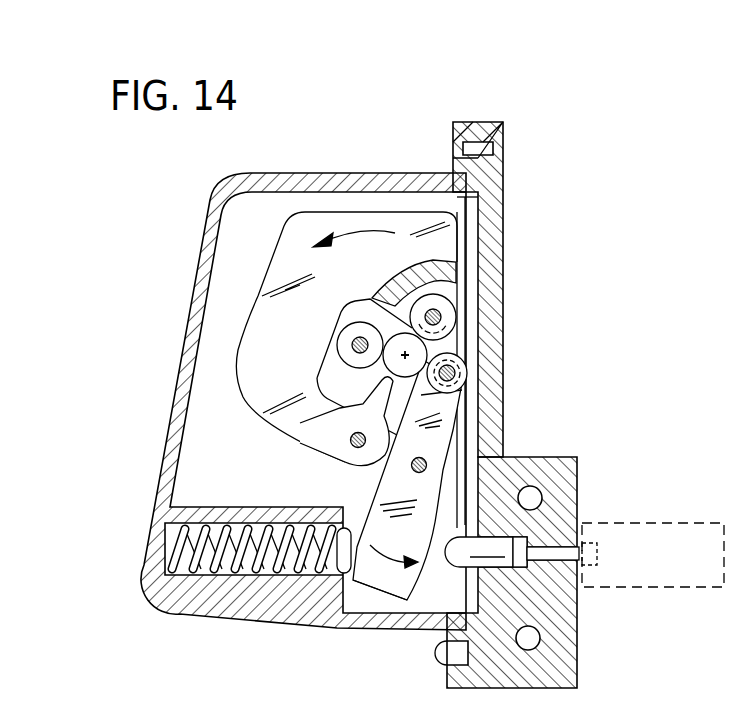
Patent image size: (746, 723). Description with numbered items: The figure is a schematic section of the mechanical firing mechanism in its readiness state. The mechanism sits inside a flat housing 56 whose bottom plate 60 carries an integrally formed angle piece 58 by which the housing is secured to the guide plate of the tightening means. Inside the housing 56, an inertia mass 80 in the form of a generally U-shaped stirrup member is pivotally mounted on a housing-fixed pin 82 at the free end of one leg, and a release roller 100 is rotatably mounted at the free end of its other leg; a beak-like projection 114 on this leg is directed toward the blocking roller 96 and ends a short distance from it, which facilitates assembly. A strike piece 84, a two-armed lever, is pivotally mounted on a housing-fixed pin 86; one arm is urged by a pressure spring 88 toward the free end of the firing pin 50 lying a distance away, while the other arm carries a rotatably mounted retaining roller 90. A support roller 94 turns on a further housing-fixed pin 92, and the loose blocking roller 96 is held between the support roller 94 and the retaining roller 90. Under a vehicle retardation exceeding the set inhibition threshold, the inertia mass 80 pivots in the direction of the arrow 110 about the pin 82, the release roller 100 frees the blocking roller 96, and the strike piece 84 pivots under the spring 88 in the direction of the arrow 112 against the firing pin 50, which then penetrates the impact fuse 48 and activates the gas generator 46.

The gas generator 46 is at (660, 567).
The impact fuse 48 is at (597, 588).
The firing pin 50 is at (452, 562).
The flat housing 56 is at (252, 178).
The angle piece 58 is at (563, 663).
The bottom plate 60 is at (490, 215).
The inertia mass 80 is at (238, 365).
The housing-fixed pin 82 is at (352, 442).
The strike piece 84 is at (382, 490).
The housing-fixed pin 86 is at (427, 462).
The pressure spring 88 is at (198, 570).
The retaining roller 90 is at (468, 373).
The housing-fixed pin 92 is at (352, 343).
The support roller 94 is at (348, 328).
The blocking roller 96 is at (427, 350).
The release roller 100 is at (447, 312).
The arrow 110 is at (358, 230).
The arrow 112 is at (376, 548).
The beak-like projection 114 is at (367, 398).